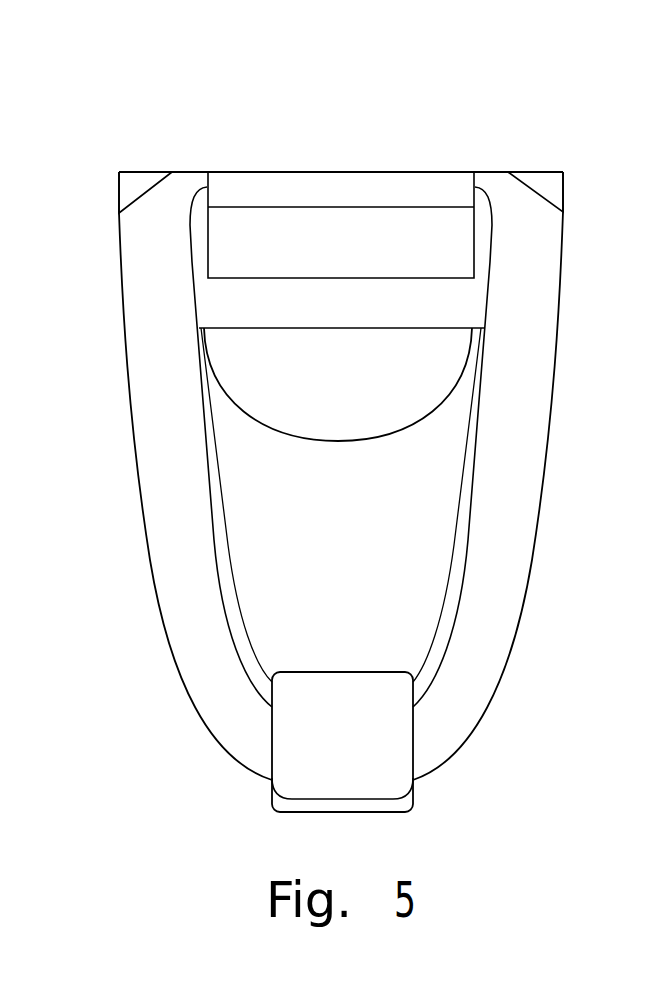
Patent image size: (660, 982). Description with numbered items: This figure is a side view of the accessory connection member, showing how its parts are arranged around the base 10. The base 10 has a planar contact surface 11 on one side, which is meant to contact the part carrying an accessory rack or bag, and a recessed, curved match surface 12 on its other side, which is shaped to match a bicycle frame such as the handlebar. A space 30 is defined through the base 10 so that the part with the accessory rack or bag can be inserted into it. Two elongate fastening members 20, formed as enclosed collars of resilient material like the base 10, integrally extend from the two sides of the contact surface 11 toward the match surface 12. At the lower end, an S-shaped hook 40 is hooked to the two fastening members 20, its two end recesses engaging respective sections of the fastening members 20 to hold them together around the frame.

The base 10 is at (440, 312).
The planar contact surface 11 is at (407, 172).
The match surface 12 is at (340, 441).
The fastening members 20 is at (138, 575).
The space 30 is at (305, 240).
The S-shaped hook 40 is at (267, 790).